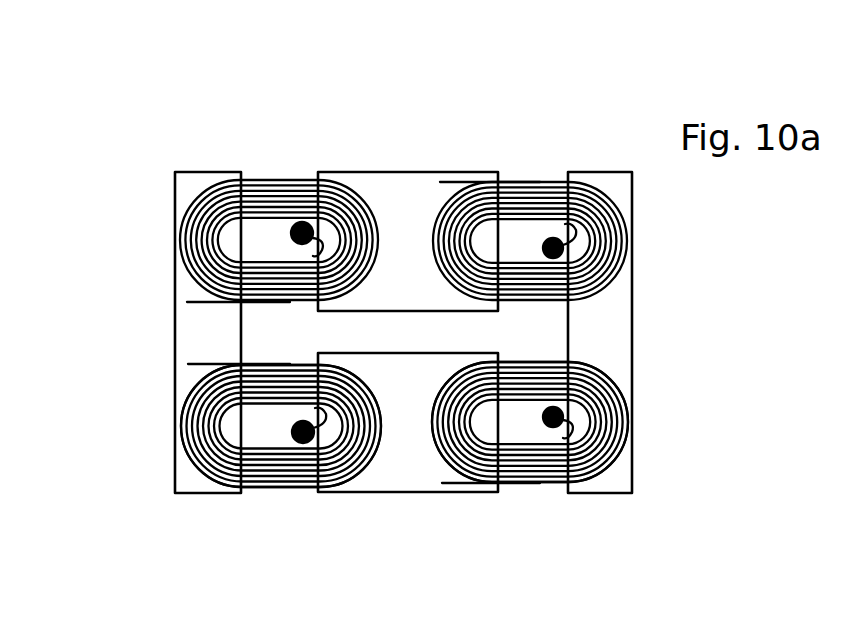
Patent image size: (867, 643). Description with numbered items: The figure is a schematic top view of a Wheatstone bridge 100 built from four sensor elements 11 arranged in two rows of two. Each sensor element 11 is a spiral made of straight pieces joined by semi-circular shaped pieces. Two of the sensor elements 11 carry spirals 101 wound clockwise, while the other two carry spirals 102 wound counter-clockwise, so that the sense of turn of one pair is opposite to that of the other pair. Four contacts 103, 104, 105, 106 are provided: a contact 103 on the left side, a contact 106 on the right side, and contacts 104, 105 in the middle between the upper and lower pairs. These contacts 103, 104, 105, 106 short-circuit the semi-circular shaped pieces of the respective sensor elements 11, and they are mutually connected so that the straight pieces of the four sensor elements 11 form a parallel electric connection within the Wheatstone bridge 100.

The Wheatstone bridge 100 is at (112, 472).
The clockwise-wound spiral 101 is at (271, 196).
The counter-clockwise-wound spiral 102 is at (522, 204).
The contact 103 is at (186, 330).
The contact 104 is at (388, 197).
The contact 105 is at (405, 388).
The contact 106 is at (612, 330).
The sensor element 11 is at (520, 470).